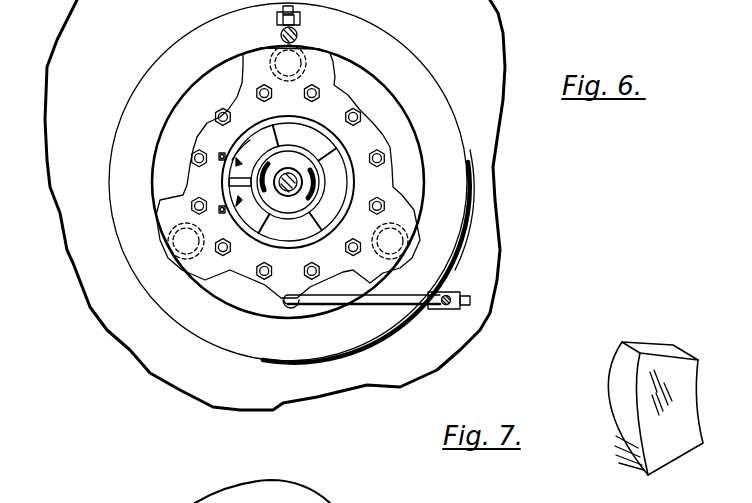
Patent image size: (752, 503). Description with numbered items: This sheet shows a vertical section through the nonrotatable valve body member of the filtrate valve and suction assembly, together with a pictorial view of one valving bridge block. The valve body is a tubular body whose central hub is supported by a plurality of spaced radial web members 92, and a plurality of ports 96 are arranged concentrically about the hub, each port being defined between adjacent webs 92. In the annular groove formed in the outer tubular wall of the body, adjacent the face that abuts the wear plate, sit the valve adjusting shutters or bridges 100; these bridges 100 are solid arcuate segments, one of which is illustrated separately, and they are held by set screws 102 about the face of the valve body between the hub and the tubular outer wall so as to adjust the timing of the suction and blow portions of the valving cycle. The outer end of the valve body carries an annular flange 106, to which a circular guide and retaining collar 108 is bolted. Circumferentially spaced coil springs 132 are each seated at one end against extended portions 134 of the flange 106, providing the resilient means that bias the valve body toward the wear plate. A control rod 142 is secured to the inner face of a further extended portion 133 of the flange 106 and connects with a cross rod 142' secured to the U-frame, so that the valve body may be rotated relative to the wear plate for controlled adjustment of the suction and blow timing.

The radial web members 92 is at (333, 155).
The ports 96 is at (343, 185).
The valve adjusting shutters or bridges 100 is at (256, 152).
The set screws 102 is at (221, 158).
The annular flange 106 is at (333, 98).
The circular guide and retaining collar 108 is at (387, 102).
The coil springs 132 is at (308, 44).
The extended portion 133 is at (283, 305).
The extended portions 134 is at (252, 67).
The control rod 142 is at (362, 313).
The cross rod 142' is at (445, 320).